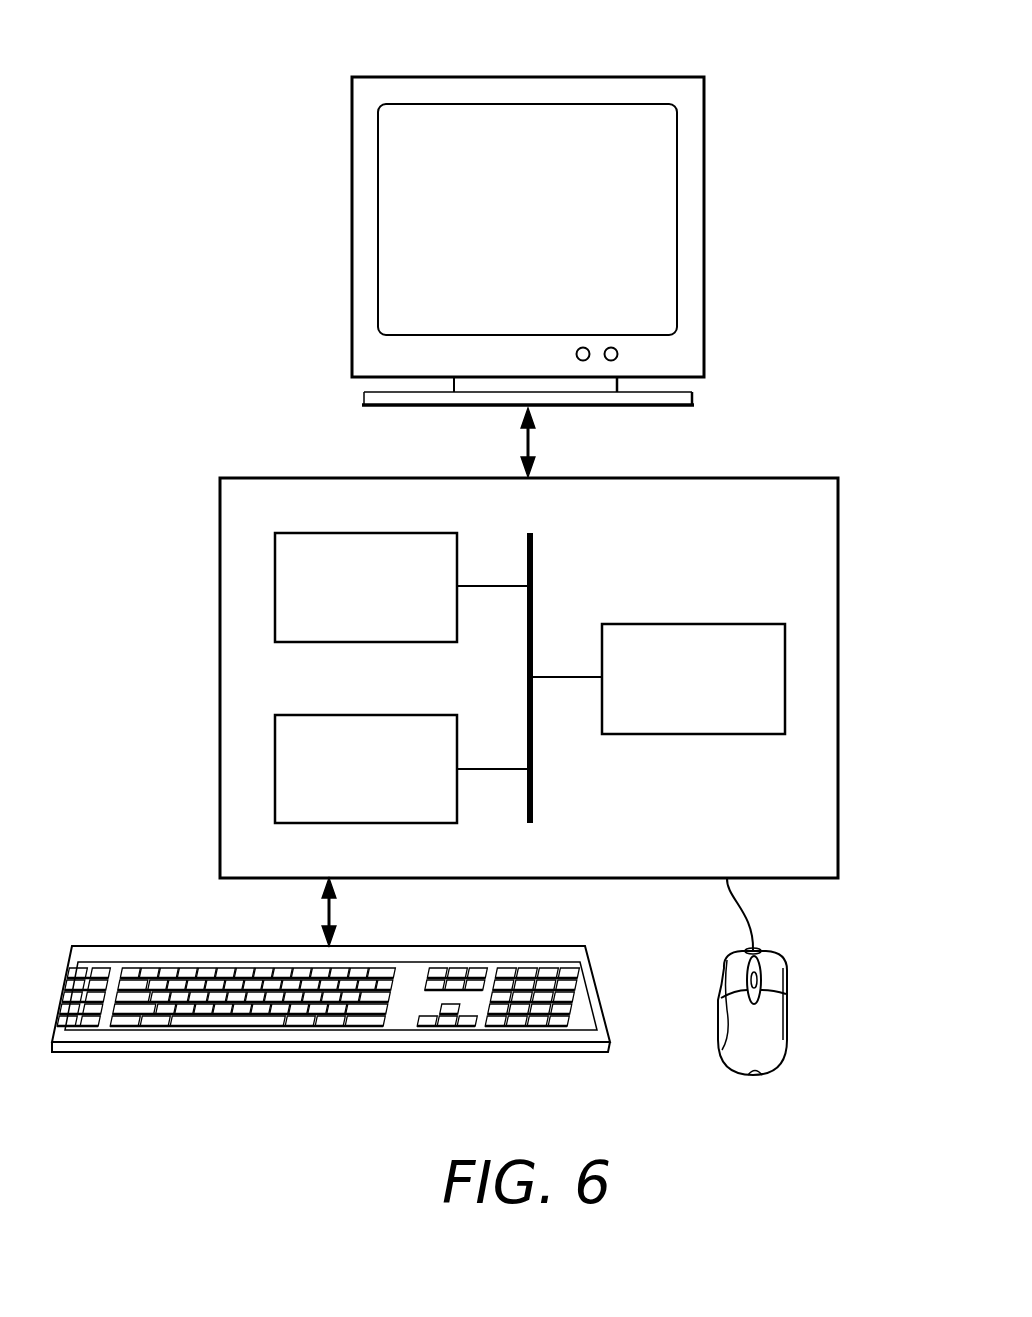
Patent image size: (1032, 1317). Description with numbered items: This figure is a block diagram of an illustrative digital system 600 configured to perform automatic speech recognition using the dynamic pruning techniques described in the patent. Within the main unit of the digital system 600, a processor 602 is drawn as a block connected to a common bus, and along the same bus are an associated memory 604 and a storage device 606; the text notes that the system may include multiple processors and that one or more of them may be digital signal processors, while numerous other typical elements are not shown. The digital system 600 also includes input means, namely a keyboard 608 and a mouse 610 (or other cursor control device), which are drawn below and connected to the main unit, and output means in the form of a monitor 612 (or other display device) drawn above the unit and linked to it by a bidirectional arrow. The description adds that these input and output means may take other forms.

The digital system 600 is at (821, 89).
The processor 602 is at (725, 698).
The memory 604 is at (398, 608).
The storage device 606 is at (398, 789).
The keyboard 608 is at (312, 1052).
The mouse 610 is at (790, 1022).
The monitor 612 is at (352, 230).